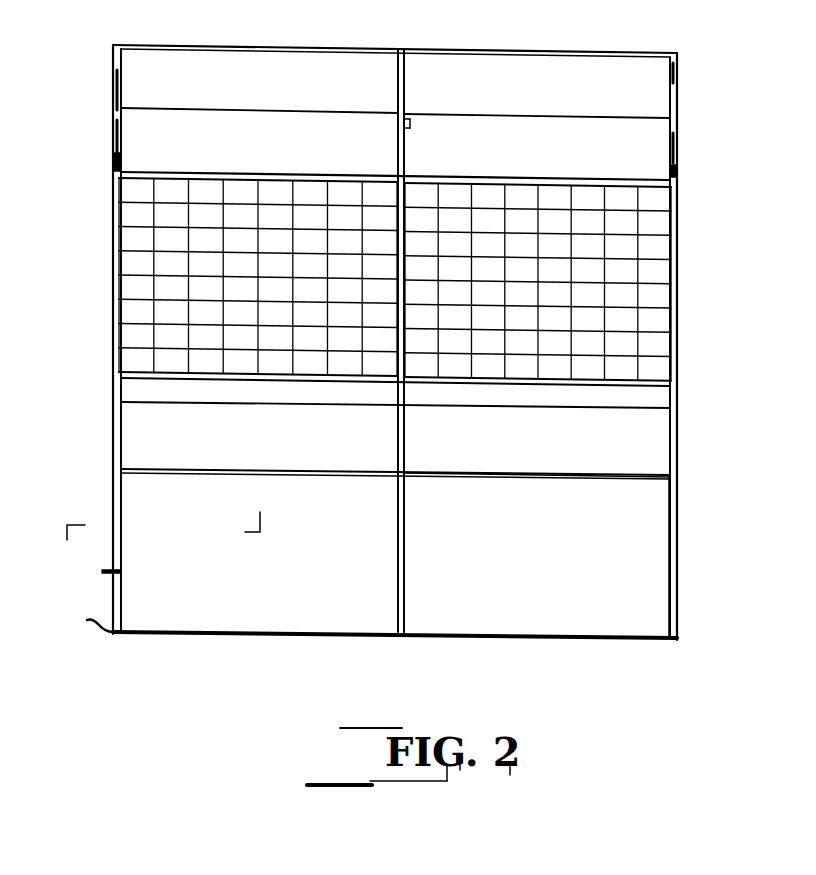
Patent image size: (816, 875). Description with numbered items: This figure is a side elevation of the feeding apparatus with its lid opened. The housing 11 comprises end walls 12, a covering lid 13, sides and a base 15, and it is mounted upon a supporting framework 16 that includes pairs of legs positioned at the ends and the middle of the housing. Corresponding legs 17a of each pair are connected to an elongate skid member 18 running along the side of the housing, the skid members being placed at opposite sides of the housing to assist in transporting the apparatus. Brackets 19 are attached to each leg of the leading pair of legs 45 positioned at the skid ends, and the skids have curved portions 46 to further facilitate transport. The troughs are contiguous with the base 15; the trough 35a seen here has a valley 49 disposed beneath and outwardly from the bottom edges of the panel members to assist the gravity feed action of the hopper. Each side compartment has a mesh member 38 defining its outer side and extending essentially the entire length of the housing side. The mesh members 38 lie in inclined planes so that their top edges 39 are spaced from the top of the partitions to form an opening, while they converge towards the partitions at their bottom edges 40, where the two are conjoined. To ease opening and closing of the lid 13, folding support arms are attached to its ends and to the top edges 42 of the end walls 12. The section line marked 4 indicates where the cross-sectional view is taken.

The section line 4- 4 is at (293, 17).
The housing 11 is at (692, 232).
The end walls 12 is at (110, 279).
The covering lid 13 is at (395, 130).
The base 15 is at (459, 476).
The supporting framework 16 is at (680, 508).
The legs 17a is at (407, 558).
The elongate skid members 18 is at (322, 638).
The brackets 19 is at (102, 573).
The trough 35a is at (395, 415).
The mesh member 38 is at (140, 322).
The top edges 39 is at (520, 175).
The bottom edges 40 is at (353, 380).
The top edges 42 is at (110, 170).
The leading pair of legs 45 is at (125, 518).
The curved portions 46 is at (87, 621).
The valley 49 is at (308, 473).